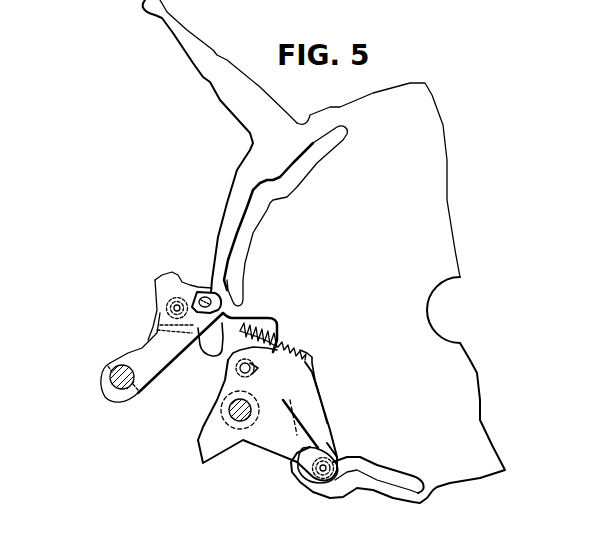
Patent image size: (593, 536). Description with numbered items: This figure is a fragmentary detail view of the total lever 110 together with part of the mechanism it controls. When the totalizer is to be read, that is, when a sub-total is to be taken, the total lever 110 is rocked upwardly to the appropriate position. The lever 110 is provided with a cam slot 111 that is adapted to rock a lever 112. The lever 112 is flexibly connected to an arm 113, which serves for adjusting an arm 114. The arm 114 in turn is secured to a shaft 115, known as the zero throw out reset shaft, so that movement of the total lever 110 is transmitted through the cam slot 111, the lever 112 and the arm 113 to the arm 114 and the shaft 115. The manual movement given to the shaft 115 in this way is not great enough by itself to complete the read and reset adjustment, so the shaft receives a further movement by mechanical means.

The total lever 110 is at (163, 18).
The cam slot 111 is at (379, 468).
The lever 112 is at (275, 447).
The arm 113 is at (199, 372).
The arm 114 is at (148, 343).
The zero throw out reset shaft 115 is at (112, 398).